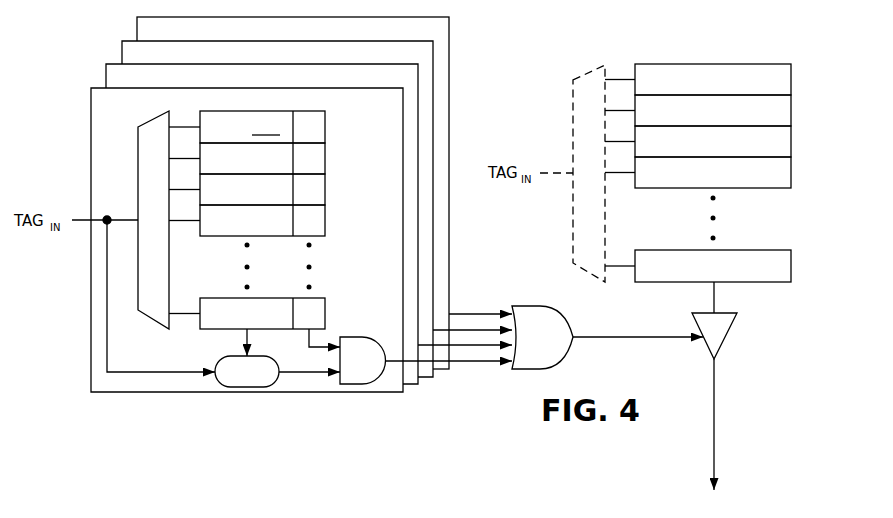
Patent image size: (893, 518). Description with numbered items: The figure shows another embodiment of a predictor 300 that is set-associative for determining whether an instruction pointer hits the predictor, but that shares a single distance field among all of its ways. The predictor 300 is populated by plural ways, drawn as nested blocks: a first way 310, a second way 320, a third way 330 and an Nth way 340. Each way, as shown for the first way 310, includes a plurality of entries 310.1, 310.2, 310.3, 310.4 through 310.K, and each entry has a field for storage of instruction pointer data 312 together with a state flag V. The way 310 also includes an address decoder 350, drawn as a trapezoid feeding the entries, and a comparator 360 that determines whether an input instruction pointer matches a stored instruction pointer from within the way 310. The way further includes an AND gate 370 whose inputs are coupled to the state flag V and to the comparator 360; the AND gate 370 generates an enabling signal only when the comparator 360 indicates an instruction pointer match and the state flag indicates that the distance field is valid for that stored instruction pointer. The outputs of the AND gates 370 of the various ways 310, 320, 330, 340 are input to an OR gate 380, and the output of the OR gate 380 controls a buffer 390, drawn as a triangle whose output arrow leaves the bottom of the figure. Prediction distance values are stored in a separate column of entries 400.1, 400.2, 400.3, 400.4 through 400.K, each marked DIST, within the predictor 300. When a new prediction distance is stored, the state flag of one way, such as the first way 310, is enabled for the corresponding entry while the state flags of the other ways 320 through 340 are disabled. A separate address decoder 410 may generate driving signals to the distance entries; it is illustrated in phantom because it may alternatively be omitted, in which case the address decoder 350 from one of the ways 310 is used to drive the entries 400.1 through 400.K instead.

The predictor 300 is at (606, 449).
The way 0 310 is at (299, 108).
The way 1 320 is at (315, 85).
The way 2 330 is at (329, 60).
The way N 340 is at (344, 38).
The instruction pointer data field 312 is at (247, 127).
The entry 310.1 is at (300, 127).
The entry 310.2 is at (326, 162).
The entry 310.3 is at (326, 192).
The entry 310.4 is at (326, 224).
The entry 310.K is at (326, 316).
The address decoder 350 is at (167, 308).
The comparator 360 is at (262, 388).
The AND gate 370 is at (376, 368).
The OR gate 380 is at (557, 345).
The buffer 390 is at (730, 329).
The entry 400.1 is at (793, 82).
The entry 400.2 is at (793, 113).
The entry 400.3 is at (793, 144).
The entry 400.4 is at (793, 175).
The entry 400.K is at (793, 268).
The address decoder 410 is at (603, 259).